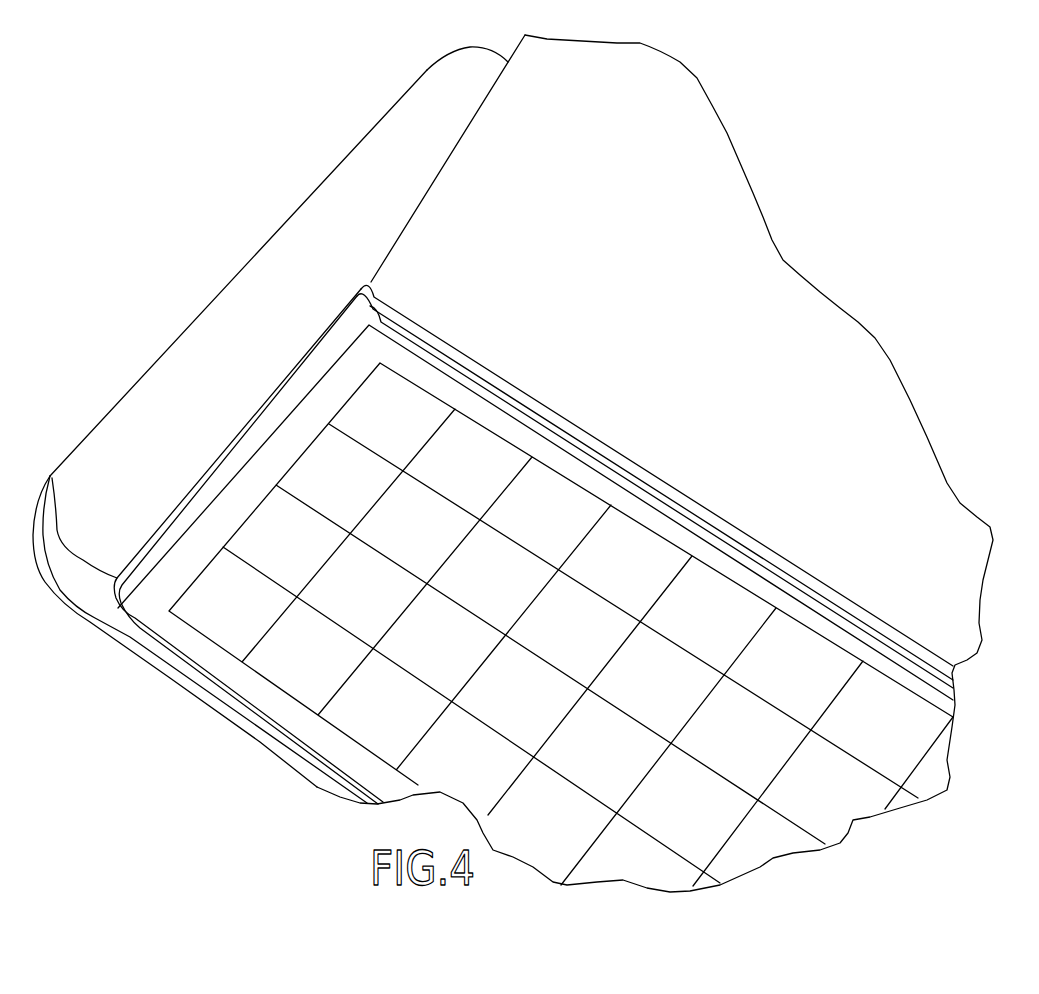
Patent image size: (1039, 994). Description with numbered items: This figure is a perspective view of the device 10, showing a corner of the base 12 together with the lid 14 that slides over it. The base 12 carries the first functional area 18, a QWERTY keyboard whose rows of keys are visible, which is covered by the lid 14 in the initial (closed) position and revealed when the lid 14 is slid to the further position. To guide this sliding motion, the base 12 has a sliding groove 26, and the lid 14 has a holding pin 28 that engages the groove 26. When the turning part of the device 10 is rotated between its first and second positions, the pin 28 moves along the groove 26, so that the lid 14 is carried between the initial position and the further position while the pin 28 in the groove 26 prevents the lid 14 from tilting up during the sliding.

The device 10 is at (798, 197).
The base 12 is at (97, 474).
The lid 14 is at (653, 143).
The first functional area 18 is at (302, 662).
The sliding groove 26 is at (218, 458).
The pin 28 is at (364, 294).